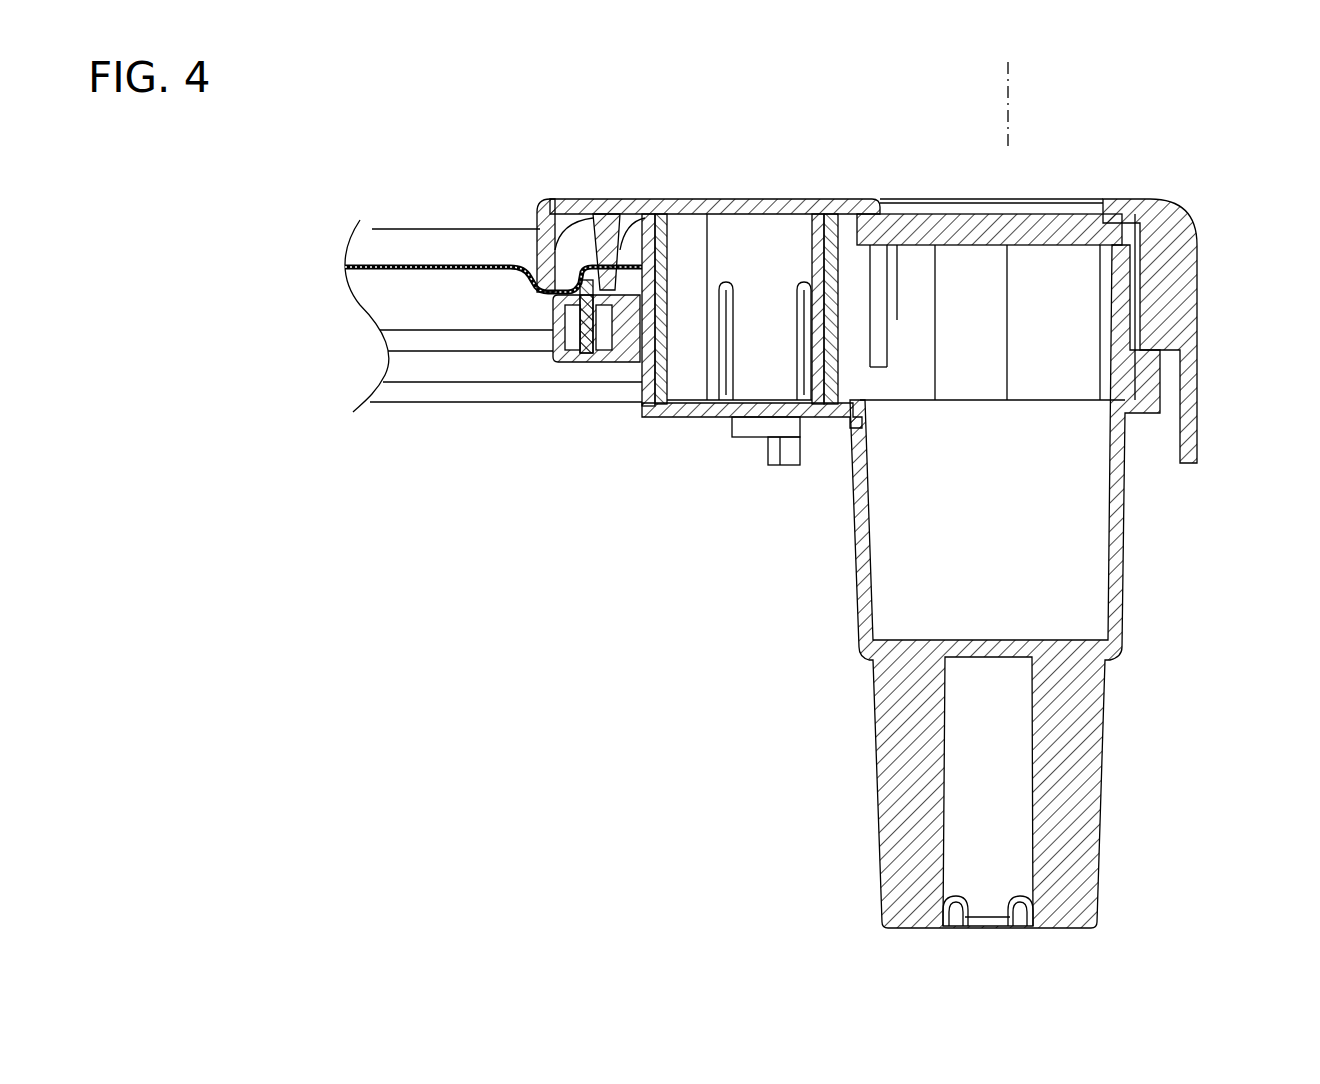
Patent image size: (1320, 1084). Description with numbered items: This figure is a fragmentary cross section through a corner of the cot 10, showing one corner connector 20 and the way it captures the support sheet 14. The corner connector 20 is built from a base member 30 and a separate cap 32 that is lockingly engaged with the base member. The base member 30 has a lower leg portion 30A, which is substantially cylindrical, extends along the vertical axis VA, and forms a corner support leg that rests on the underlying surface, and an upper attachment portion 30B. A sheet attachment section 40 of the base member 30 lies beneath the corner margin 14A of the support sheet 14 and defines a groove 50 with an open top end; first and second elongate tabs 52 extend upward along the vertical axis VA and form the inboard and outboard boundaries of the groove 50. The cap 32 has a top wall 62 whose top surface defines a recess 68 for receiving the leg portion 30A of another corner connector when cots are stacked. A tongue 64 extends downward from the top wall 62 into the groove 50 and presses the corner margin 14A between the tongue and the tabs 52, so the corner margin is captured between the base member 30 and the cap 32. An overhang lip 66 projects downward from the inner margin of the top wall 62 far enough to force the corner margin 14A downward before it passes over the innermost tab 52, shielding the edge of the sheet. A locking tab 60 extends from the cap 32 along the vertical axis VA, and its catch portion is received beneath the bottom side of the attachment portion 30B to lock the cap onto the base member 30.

The cot 10 is at (345, 812).
The support sheet 14 is at (370, 262).
The corner margin 14A is at (588, 293).
The corner connector 20 is at (800, 903).
The base member 30 is at (1079, 586).
The leg portion 30A is at (1103, 762).
The attachment portion 30B is at (1140, 295).
The cap 32 is at (1185, 215).
The sheet attachment section 40 is at (617, 362).
The groove 50 is at (593, 303).
The elongate tabs 52 is at (655, 305).
The locking tab 60 is at (750, 432).
The top wall 62 is at (588, 212).
The tongue 64 is at (543, 199).
The overhang lip 66 is at (543, 266).
The recess 68 is at (877, 212).
The vertical axis VA is at (1010, 82).